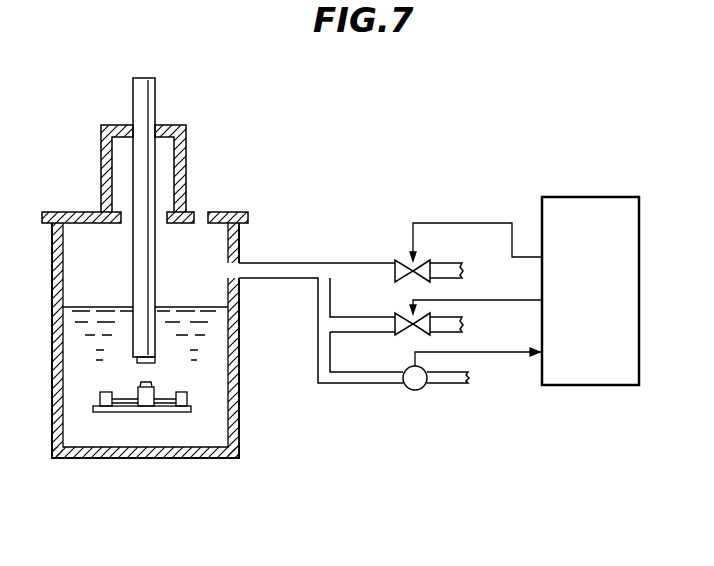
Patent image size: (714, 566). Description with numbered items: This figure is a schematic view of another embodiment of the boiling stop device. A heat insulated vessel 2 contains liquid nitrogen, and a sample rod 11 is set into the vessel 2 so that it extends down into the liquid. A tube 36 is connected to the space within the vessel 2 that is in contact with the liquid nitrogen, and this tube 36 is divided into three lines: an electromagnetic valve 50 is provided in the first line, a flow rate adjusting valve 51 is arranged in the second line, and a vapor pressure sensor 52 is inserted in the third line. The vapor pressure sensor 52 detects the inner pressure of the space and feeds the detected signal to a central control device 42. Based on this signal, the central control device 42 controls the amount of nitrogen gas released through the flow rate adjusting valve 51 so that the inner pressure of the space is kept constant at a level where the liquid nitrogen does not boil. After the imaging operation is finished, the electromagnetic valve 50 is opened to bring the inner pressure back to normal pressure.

The heat insulated vessel 2 is at (158, 458).
The sample rod 11 is at (156, 95).
The tube 36 is at (284, 264).
The central control device 42 is at (594, 196).
The electromagnetic valve 50 is at (405, 258).
The flow rate adjusting valve 51 is at (407, 332).
The vapor pressure sensor 52 is at (417, 383).